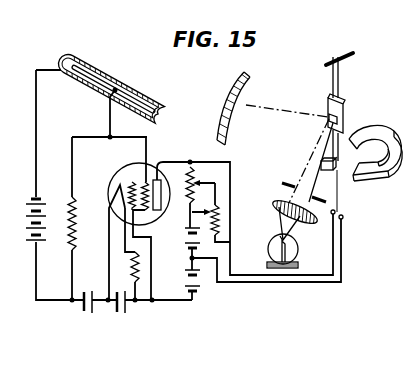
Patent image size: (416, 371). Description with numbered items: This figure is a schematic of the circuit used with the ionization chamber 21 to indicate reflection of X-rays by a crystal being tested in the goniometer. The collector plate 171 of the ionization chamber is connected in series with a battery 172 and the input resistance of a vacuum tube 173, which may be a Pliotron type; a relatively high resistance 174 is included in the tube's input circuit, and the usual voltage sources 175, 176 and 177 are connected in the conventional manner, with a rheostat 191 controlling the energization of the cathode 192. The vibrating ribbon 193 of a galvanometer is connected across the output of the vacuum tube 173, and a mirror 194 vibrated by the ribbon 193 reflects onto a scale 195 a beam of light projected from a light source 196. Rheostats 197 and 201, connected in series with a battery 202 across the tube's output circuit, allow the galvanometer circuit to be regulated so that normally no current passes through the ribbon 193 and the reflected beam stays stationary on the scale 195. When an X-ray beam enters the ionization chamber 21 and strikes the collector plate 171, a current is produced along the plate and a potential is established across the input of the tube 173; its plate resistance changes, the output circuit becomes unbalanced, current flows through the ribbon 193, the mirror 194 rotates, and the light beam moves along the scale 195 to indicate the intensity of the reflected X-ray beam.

The collector plate 171 is at (102, 71).
The ionization chamber 21 is at (138, 91).
The battery 172 is at (44, 200).
The relatively high resistance 174 is at (79, 198).
The vacuum tube 173 is at (151, 166).
The cathode 192 is at (117, 190).
The rheostat 191 is at (124, 264).
The voltage source 175 is at (89, 312).
The voltage source 176 is at (121, 313).
The rheostat 197 is at (198, 182).
The rheostat 201 is at (222, 210).
The battery 202 is at (198, 238).
The voltage source 177 is at (201, 280).
The vibrating ribbon 193 is at (343, 206).
The mirror 194 is at (344, 111).
The light source 196 is at (298, 251).
The scale 195 is at (241, 75).